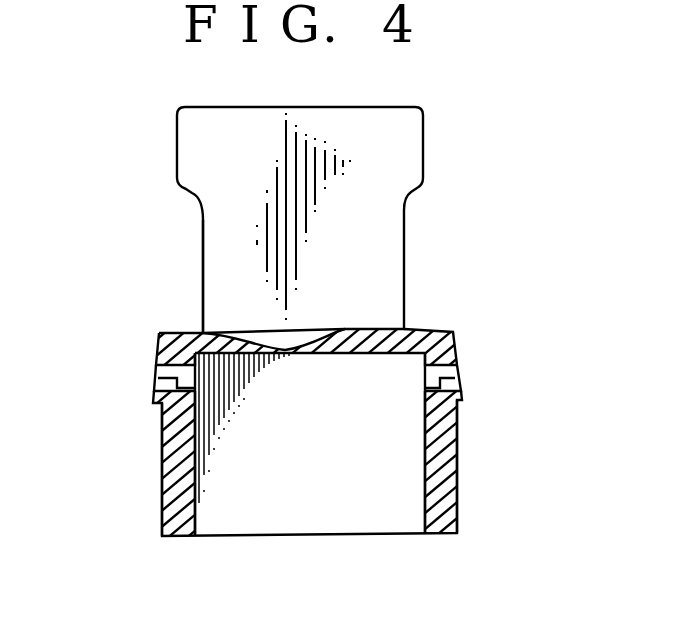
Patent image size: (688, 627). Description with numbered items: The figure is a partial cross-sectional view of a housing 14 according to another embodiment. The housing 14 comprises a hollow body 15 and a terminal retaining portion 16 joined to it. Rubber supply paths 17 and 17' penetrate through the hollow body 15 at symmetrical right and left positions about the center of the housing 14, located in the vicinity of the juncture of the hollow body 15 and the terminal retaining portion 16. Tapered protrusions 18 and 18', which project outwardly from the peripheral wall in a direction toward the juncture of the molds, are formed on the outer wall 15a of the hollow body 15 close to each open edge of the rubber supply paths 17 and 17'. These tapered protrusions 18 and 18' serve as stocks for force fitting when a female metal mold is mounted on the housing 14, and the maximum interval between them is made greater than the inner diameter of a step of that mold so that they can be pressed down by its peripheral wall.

The housing 14 is at (443, 207).
The terminal retaining portion 16 is at (200, 256).
The tapered protrusion 18 is at (344, 432).
The tapered protrusion 18' is at (135, 349).
The rubber supply path 17 is at (474, 396).
The rubber supply path 17' is at (131, 398).
The hollow body 15 is at (164, 540).
The outer wall 15a is at (162, 482).